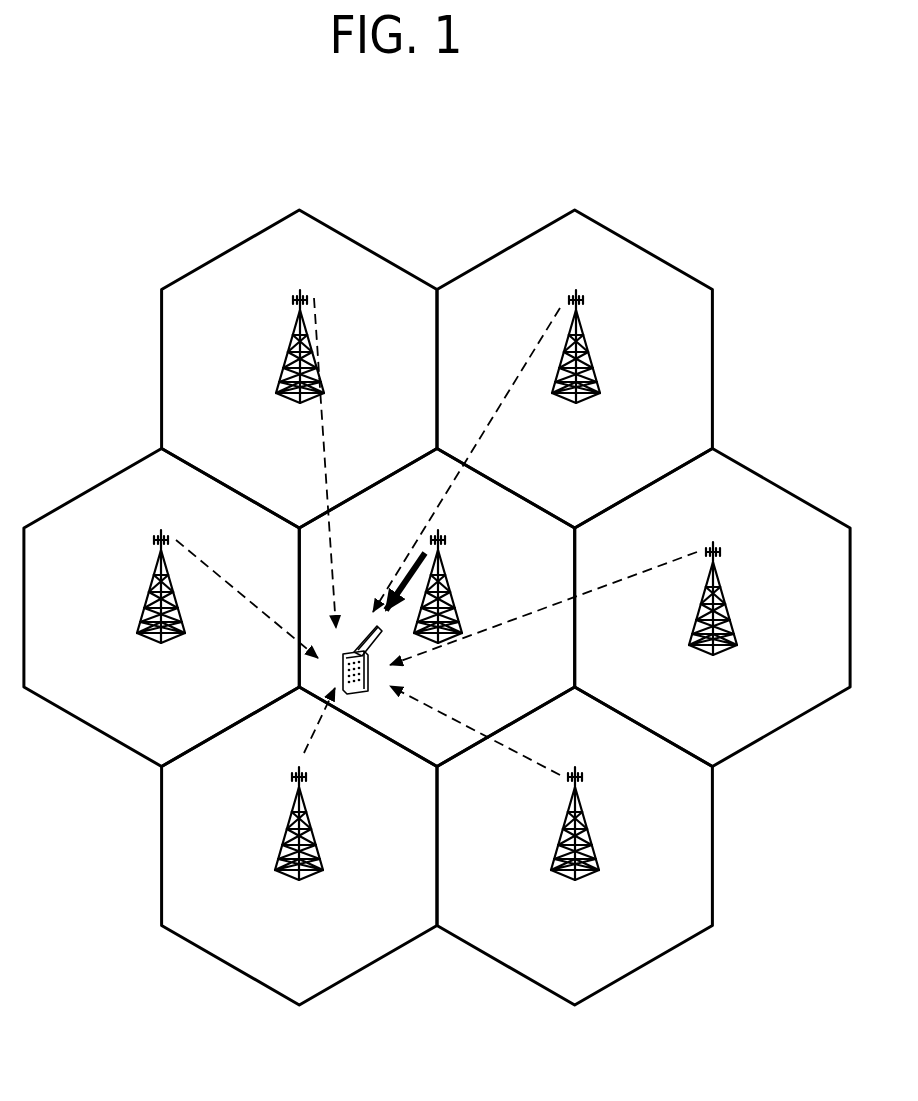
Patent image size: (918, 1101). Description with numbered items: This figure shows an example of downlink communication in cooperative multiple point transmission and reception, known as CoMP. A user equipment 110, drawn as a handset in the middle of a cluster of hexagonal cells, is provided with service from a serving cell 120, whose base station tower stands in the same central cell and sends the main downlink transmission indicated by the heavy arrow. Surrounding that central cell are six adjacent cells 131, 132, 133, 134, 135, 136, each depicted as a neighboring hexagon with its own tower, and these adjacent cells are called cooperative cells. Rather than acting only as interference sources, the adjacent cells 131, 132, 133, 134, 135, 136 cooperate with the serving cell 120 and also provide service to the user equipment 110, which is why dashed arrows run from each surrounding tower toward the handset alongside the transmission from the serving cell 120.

The user equipment (mobile terminal) 110 is at (362, 691).
The serving cell 120 is at (443, 560).
The adjacent cell 131 is at (296, 322).
The adjacent cell 132 is at (158, 560).
The adjacent cell 133 is at (304, 798).
The adjacent cell 134 is at (580, 798).
The adjacent cell 135 is at (718, 573).
The adjacent cell 136 is at (580, 322).